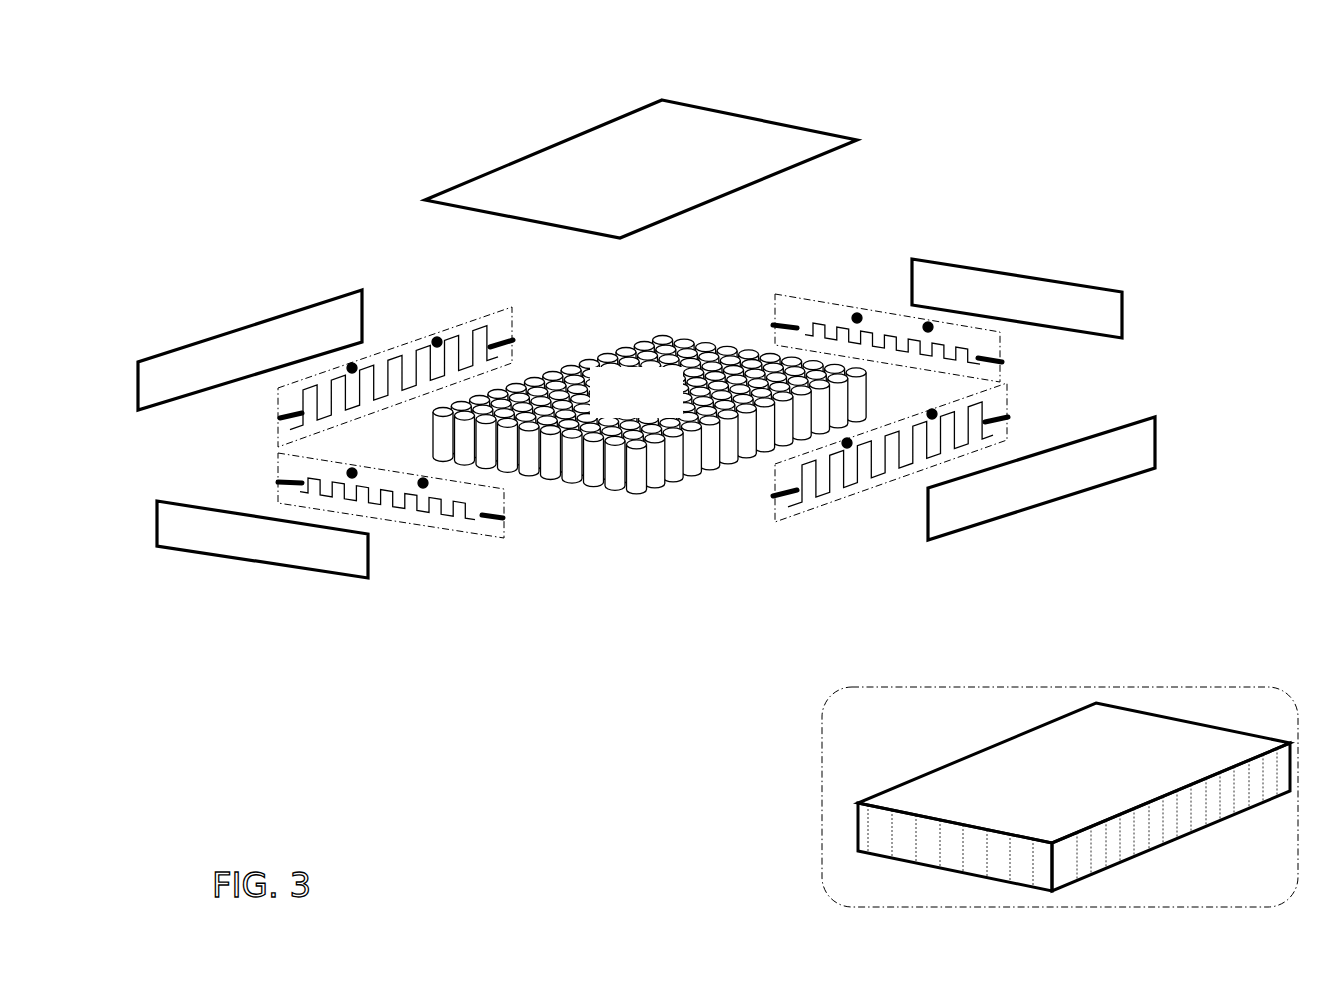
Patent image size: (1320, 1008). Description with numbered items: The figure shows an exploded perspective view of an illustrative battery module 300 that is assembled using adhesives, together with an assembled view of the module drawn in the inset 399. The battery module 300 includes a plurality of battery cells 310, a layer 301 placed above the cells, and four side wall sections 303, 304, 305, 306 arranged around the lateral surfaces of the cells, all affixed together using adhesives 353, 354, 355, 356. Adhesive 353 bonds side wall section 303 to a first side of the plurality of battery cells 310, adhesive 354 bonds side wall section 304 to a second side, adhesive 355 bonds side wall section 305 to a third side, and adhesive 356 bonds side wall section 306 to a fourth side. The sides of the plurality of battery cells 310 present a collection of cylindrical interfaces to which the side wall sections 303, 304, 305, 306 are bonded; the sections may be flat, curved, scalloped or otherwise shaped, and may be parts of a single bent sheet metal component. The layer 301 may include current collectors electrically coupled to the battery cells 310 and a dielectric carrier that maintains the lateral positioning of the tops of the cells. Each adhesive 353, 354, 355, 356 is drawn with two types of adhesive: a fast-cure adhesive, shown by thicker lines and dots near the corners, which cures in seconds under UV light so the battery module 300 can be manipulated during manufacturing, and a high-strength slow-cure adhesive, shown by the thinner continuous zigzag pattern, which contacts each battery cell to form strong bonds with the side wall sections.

The battery module 300 is at (1178, 37).
The layer 301 is at (620, 180).
The side wall section 303 is at (1127, 422).
The side wall section 304 is at (139, 361).
The side wall section 305 is at (1092, 285).
The side wall section 306 is at (165, 547).
The plurality of battery cells 310 is at (617, 406).
The adhesive 353 is at (838, 500).
The adhesive 354 is at (279, 419).
The adhesive 355 is at (840, 306).
The adhesive 356 is at (432, 527).
The thermal insulation panel 399 is at (875, 729).